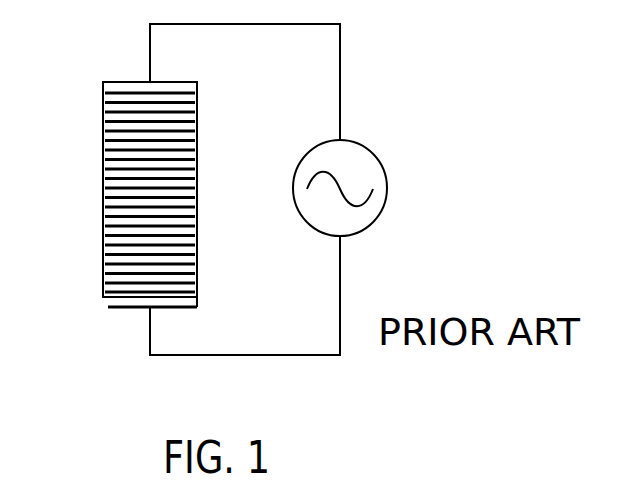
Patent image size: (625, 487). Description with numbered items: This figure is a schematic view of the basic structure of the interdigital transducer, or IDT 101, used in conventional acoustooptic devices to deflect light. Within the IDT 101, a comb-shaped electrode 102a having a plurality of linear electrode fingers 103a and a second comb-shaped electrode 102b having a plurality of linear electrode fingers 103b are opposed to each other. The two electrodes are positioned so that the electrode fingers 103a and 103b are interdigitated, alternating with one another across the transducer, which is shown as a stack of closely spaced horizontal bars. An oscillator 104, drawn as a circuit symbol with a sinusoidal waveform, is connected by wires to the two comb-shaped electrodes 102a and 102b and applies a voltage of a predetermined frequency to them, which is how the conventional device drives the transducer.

The interdigital transducer 101 is at (109, 70).
The comb-shaped electrode 102a is at (111, 187).
The comb-shaped electrode 102b is at (184, 159).
The linear electrode fingers 103a is at (111, 229).
The linear electrode fingers 103b is at (184, 206).
The oscillator 104 is at (375, 152).